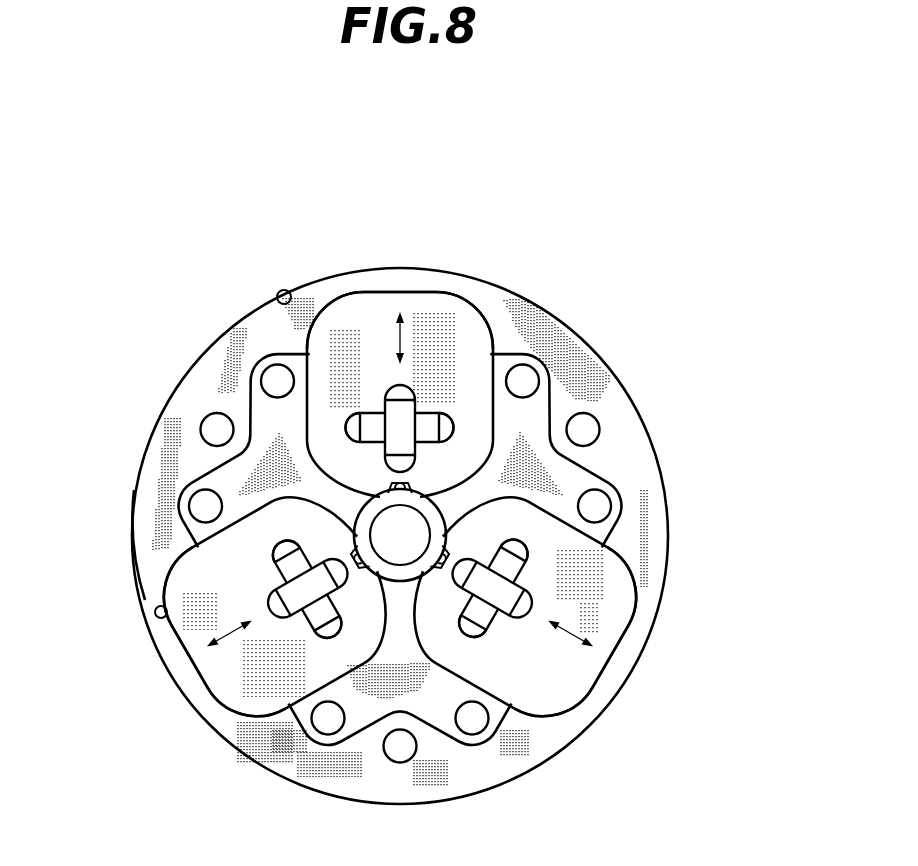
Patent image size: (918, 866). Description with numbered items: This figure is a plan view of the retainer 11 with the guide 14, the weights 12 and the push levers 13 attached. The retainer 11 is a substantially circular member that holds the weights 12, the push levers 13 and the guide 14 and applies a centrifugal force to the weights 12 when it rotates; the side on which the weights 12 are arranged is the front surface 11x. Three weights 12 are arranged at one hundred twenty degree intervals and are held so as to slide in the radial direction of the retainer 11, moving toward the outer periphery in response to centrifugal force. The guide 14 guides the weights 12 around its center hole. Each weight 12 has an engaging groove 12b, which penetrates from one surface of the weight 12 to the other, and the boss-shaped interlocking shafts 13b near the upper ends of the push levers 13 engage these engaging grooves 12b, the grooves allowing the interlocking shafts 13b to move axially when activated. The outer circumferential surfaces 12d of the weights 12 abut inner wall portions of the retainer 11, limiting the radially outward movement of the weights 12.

The retainer 11 is at (207, 370).
The front surface 11x is at (162, 430).
The weight 12 is at (430, 307).
The engaging groove 12b is at (457, 419).
The outer circumferential surface 12d is at (397, 291).
The push lever 13 is at (402, 410).
The interlocking shaft 13b is at (373, 417).
The guide 14 is at (445, 695).